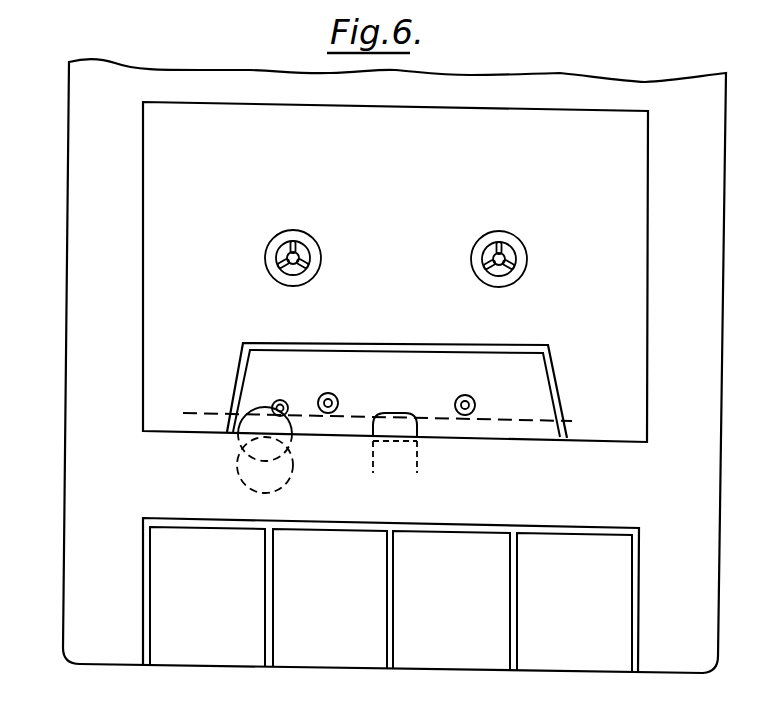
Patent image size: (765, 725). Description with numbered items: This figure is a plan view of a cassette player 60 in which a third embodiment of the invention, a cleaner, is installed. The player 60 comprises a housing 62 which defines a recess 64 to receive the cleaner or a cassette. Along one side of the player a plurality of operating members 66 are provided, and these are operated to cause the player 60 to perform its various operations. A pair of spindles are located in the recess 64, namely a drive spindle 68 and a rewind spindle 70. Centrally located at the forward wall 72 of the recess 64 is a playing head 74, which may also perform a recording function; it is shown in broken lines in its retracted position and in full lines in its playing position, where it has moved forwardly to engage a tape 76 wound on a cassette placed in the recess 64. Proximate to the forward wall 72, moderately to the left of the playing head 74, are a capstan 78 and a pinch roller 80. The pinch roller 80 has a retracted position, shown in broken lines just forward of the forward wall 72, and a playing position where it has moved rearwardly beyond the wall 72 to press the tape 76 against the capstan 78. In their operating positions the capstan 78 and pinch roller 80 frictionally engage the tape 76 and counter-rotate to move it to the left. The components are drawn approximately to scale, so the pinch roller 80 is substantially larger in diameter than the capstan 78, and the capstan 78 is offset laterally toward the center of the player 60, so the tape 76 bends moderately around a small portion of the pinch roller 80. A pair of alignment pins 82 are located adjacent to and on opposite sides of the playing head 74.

The cassette player 60 is at (60, 512).
The housing 62 is at (66, 322).
The recess 64 is at (143, 232).
The operating members 66 is at (243, 652).
The drive spindle 68 is at (308, 245).
The rewind spindle 70 is at (514, 245).
The forward wall 72 is at (462, 437).
The playing head 74 is at (392, 420).
The tape 76 is at (496, 415).
The capstan 78 is at (285, 400).
The pinch roller 80 is at (252, 420).
The alignment pins 82 is at (333, 394).